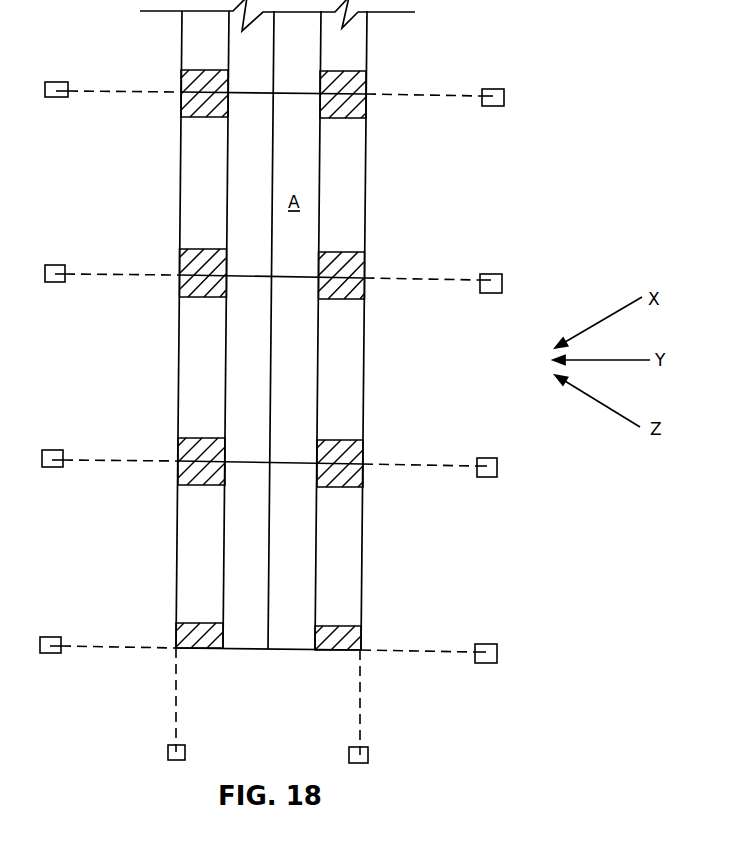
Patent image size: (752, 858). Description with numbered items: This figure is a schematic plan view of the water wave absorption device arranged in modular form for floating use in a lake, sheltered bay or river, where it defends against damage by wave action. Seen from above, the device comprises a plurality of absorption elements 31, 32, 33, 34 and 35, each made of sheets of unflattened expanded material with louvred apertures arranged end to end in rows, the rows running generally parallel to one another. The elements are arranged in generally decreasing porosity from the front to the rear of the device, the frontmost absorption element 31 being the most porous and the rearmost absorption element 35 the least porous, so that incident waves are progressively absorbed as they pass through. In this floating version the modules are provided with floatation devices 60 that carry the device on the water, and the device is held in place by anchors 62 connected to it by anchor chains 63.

The absorption element 31 is at (365, 205).
The absorption element 32 is at (320, 163).
The absorption element 33 is at (272, 166).
The absorption element 34 is at (228, 160).
The absorption element 35 is at (181, 164).
The floatation device 60 is at (181, 107).
The anchor 62 is at (45, 89).
The anchor chain 63 is at (126, 90).